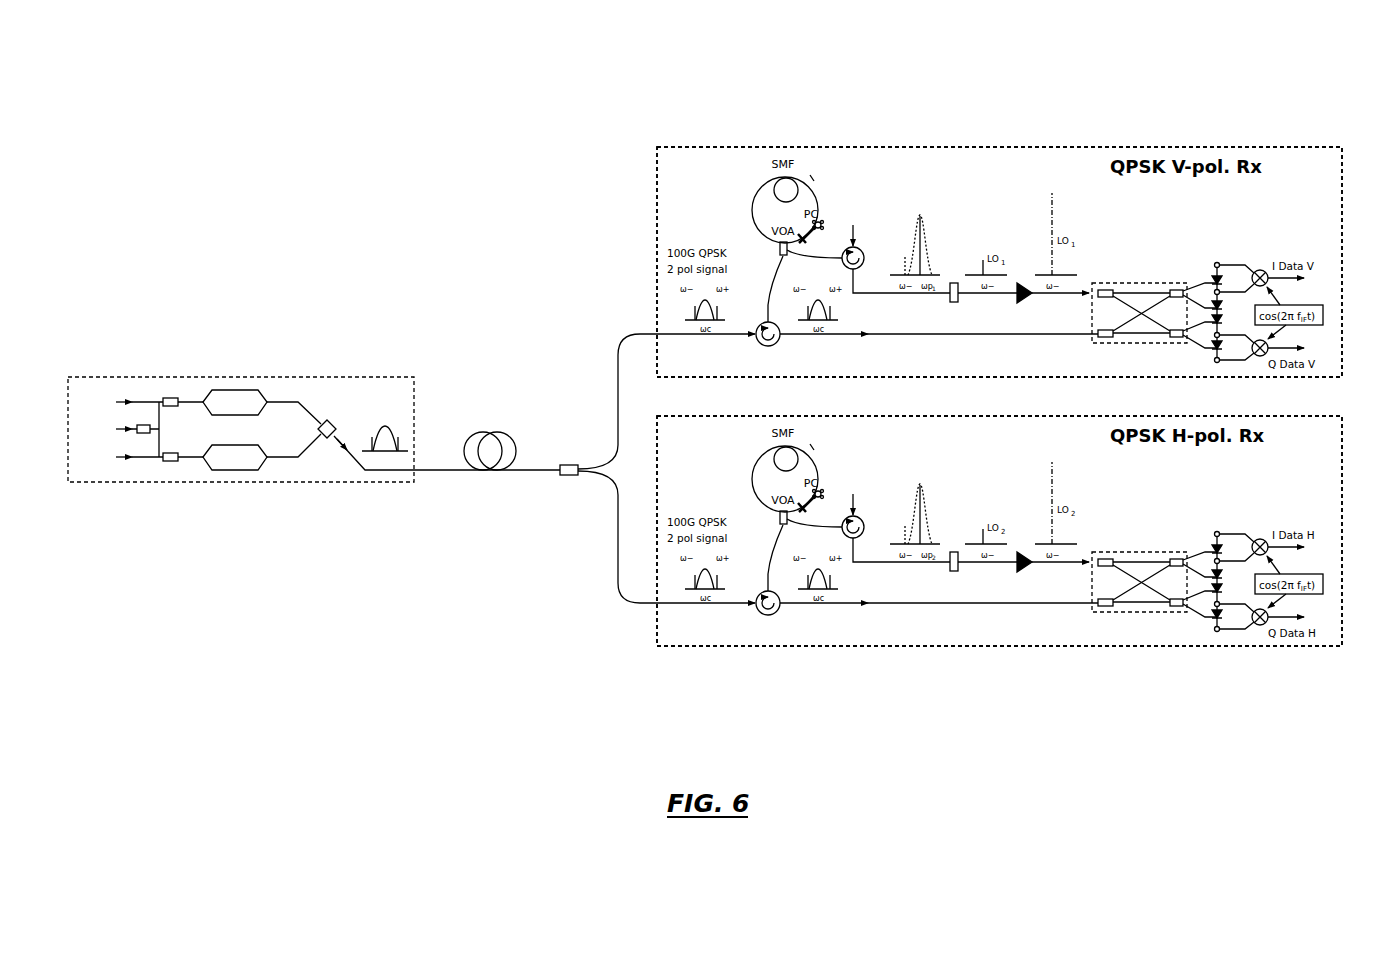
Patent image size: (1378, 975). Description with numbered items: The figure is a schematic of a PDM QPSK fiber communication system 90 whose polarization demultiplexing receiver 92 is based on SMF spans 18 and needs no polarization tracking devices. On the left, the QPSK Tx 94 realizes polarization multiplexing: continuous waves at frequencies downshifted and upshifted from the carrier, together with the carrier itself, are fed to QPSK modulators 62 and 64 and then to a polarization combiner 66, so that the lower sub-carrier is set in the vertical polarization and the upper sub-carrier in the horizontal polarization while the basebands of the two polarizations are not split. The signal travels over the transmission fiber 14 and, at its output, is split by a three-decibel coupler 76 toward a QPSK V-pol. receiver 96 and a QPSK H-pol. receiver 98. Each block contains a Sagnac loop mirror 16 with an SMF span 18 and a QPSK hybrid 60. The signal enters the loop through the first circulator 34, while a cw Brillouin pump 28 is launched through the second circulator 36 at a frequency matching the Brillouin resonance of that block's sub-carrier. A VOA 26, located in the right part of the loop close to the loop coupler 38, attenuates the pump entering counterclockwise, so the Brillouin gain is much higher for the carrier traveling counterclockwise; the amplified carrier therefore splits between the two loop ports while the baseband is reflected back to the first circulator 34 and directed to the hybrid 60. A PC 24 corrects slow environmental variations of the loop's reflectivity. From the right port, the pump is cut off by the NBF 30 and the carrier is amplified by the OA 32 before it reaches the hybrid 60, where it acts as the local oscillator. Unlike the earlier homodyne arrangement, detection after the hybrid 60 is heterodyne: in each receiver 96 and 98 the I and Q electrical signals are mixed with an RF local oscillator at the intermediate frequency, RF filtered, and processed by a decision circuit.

The transmission fiber 14 is at (515, 377).
The Sagnac loop mirror 16 is at (812, 172).
The SMF span 18 is at (788, 152).
The PC 24 is at (827, 206).
The VOA 26 is at (770, 211).
The pump 28 is at (888, 194).
The NBF 30 is at (955, 274).
The OA 32 is at (1024, 322).
The first circulator 34 is at (766, 321).
The second circulator 36 is at (878, 244).
The loop coupler 38 is at (780, 247).
The QPSK hybrid receiver 60 is at (1150, 257).
The QPSK modulator 62 is at (240, 390).
The QPSK modulator 64 is at (240, 470).
The polarization combiner 66 is at (330, 463).
The 3 dB coupler 76 is at (575, 450).
The PDM QPSK fiber communication system 90 is at (730, 91).
The polarization demultiplexing receiver 92 is at (995, 112).
The QPSK Tx 94 is at (350, 377).
The QPSK V-pol. receiver 96 is at (1217, 146).
The QPSK H-pol. receiver 98 is at (1228, 645).